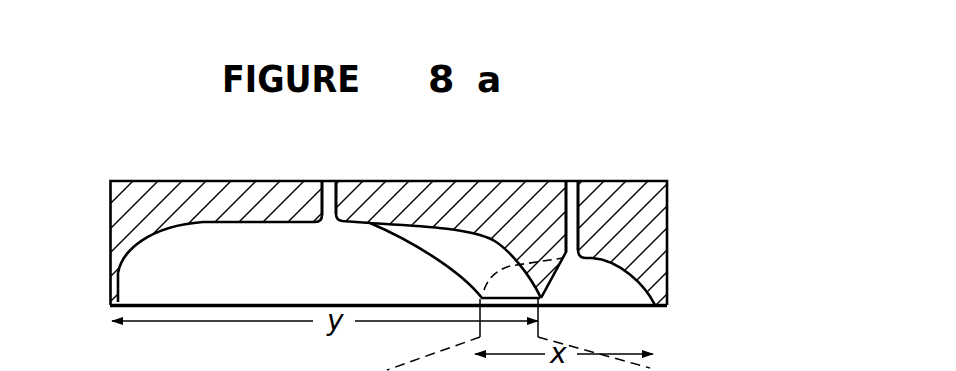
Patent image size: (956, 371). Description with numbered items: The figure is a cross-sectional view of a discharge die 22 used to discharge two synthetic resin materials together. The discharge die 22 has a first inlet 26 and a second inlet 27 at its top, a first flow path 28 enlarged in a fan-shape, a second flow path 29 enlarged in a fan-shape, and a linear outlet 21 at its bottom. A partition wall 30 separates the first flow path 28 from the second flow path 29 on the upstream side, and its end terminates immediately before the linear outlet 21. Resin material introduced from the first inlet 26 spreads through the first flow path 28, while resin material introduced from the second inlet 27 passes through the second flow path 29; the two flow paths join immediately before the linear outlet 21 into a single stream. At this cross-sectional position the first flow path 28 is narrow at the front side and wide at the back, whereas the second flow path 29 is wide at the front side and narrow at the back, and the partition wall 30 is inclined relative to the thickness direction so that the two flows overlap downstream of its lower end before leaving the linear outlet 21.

The linear outlet 21 is at (163, 306).
The discharge die 22 is at (110, 250).
The first inlet 26 is at (590, 168).
The second inlet 27 is at (330, 182).
The first flow path 28 is at (588, 280).
The second flow path 29 is at (215, 250).
The partition wall 30 is at (513, 280).